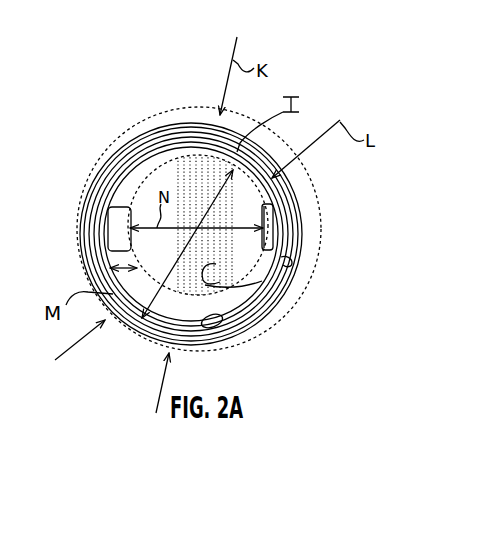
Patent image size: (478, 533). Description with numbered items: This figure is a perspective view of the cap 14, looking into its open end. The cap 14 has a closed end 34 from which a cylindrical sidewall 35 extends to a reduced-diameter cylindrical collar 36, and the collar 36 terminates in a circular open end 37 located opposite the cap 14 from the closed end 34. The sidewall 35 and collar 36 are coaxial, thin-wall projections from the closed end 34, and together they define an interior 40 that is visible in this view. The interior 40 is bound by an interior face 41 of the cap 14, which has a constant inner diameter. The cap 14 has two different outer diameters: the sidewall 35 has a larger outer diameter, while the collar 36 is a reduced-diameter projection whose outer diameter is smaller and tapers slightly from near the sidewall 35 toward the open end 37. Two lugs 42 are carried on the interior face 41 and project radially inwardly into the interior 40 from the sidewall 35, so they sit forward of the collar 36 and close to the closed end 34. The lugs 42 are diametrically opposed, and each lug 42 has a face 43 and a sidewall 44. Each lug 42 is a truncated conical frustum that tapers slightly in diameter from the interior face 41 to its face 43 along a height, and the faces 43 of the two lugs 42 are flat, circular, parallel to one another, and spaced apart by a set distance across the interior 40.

The cap 14 is at (162, 110).
The closed end 34 is at (145, 130).
The cylindrical sidewall 35 is at (210, 110).
The cylindrical collar 36 is at (278, 190).
The circular open end 37 is at (83, 213).
The interior 40 is at (271, 275).
The interior face 41 is at (222, 312).
The lug 42 is at (114, 208).
The face 43 is at (137, 221).
The sidewall 44 is at (112, 262).